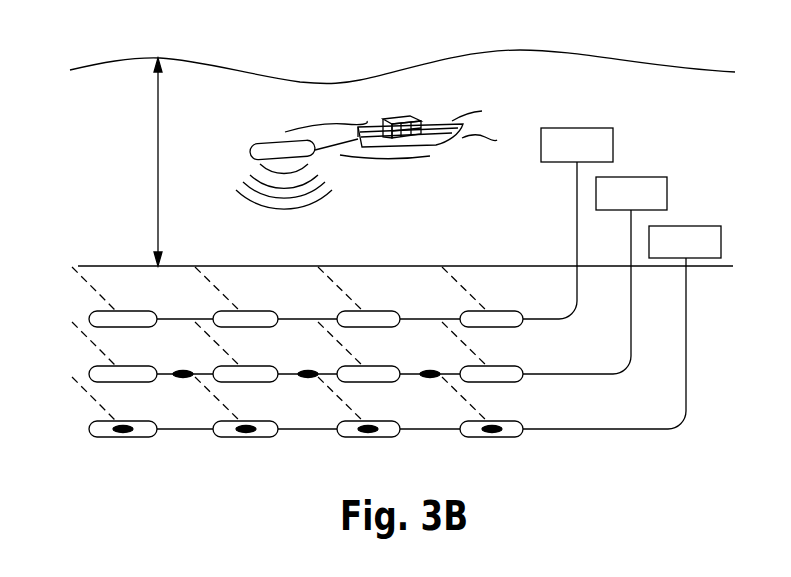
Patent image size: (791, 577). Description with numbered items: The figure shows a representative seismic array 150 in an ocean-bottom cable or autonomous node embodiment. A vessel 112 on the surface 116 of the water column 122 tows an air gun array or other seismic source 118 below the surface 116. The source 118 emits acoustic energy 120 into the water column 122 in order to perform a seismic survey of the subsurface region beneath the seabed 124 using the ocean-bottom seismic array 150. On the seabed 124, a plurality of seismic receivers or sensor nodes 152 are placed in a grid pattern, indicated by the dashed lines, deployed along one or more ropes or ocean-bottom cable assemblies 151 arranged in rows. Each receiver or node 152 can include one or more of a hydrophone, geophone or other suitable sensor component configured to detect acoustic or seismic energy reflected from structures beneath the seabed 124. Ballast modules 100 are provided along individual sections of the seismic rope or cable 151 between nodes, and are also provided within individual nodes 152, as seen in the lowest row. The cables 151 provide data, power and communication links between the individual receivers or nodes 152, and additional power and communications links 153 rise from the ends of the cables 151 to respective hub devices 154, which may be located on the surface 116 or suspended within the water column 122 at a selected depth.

The ballast module 100 is at (183, 371).
The vessel 112 is at (440, 105).
The surface 116 is at (111, 64).
The seismic source 118 is at (266, 142).
The acoustic energy 120 is at (320, 202).
The water column 122 is at (115, 166).
The seabed 124 is at (110, 263).
The seismic array 150 is at (218, 294).
The ocean-bottom cable assembly 151 is at (443, 317).
The sensor node 152 is at (148, 311).
The power and communications link 153 is at (578, 278).
The hub device 154 is at (577, 128).